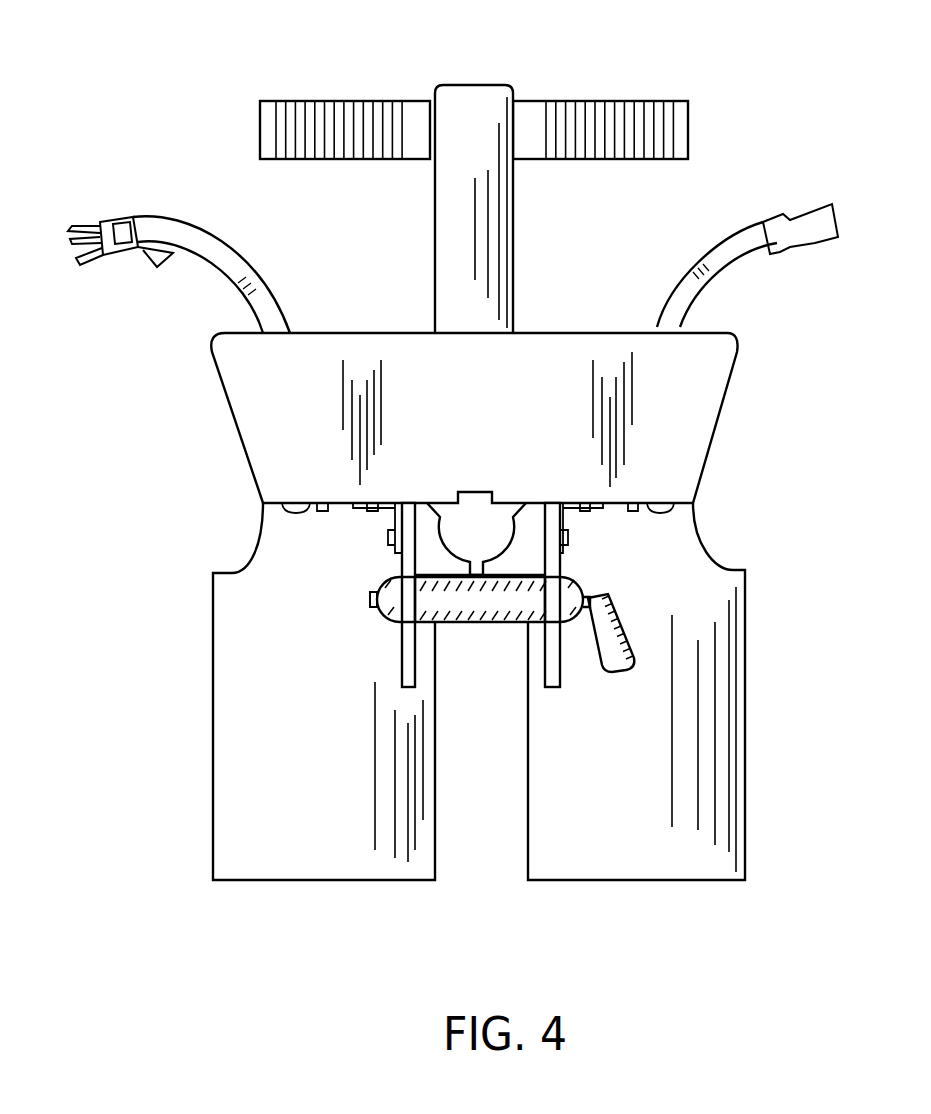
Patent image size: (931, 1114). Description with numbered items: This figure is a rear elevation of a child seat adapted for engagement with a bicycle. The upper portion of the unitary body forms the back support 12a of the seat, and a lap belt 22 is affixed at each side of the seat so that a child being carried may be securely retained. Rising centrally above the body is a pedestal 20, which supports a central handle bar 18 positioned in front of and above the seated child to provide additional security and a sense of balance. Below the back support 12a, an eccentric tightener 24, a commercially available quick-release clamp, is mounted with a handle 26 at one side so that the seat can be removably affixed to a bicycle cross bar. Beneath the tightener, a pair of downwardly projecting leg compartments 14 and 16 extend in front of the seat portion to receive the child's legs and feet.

The back support 12a is at (500, 429).
The leg compartment 14 is at (312, 802).
The leg compartment 16 is at (618, 798).
The handle bar 18 is at (625, 100).
The pedestal 20 is at (484, 100).
The lap belt 22 is at (712, 254).
The eccentric tightener 24 is at (478, 623).
The handle 26 is at (610, 615).